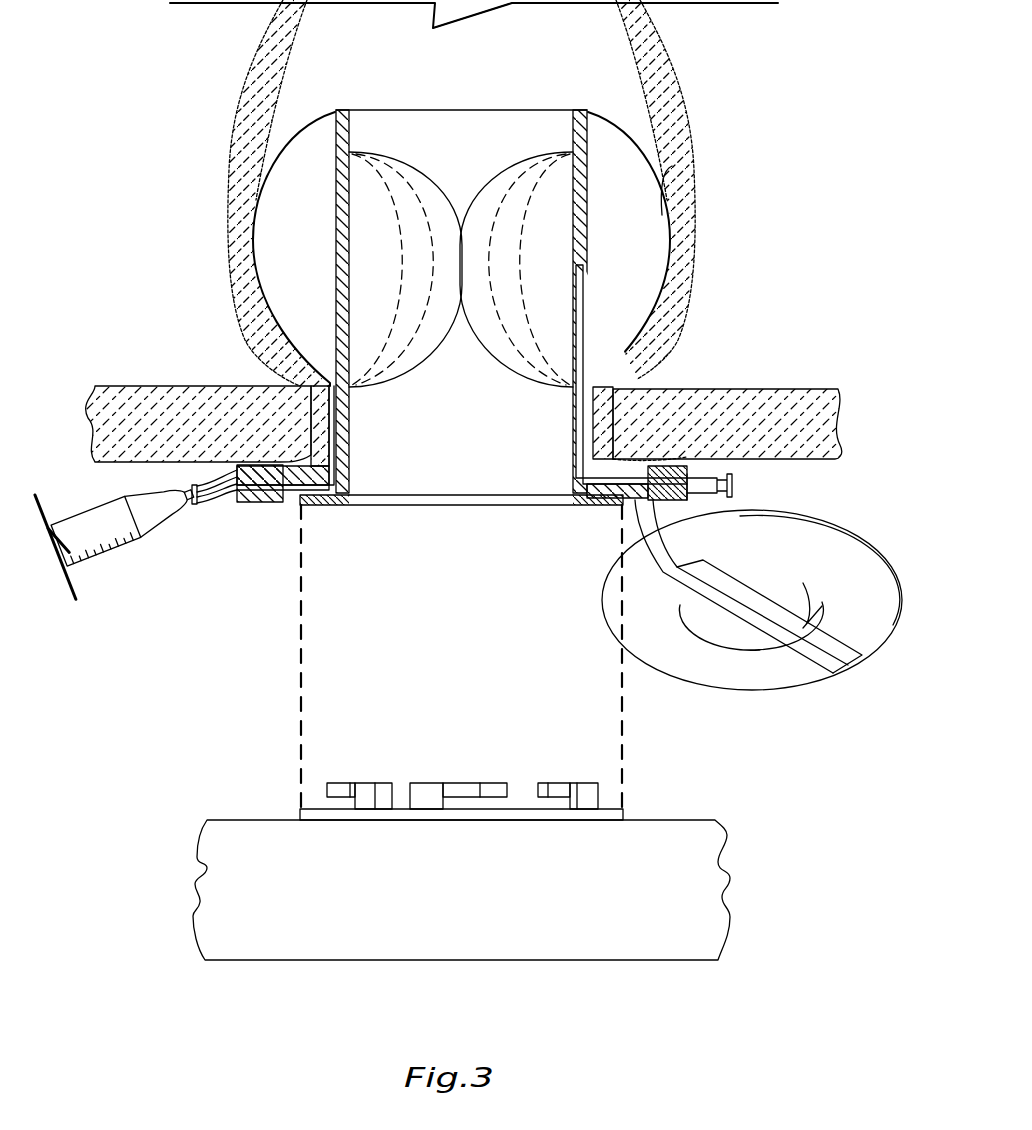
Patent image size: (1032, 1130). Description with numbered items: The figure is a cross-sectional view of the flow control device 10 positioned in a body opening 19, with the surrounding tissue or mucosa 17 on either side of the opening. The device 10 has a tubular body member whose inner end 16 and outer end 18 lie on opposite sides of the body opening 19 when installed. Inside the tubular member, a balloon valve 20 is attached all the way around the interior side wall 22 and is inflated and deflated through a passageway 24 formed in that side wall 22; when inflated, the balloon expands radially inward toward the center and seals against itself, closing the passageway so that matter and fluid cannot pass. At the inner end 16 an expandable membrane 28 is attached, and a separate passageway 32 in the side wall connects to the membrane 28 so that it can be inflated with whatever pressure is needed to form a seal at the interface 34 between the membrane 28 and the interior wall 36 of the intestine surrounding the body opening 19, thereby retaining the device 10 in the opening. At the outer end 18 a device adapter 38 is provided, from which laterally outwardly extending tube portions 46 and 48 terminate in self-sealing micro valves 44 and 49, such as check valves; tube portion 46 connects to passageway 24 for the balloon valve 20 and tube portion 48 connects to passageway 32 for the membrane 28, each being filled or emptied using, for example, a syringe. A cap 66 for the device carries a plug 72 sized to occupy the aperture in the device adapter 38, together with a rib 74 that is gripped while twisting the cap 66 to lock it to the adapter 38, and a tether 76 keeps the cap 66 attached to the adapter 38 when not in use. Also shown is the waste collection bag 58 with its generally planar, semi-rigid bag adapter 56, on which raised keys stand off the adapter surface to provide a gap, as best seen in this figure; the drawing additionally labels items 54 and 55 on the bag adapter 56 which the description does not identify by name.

The flow control device 10 is at (376, 91).
The inner end 16 is at (553, 110).
The tissue or mucosa 17 is at (243, 460).
The outer end 18 is at (445, 506).
The body opening 19 is at (593, 432).
The balloon valve 20 is at (502, 355).
The interior side wall 22 is at (350, 143).
The passageway 24 is at (577, 462).
The expandable membrane 28 is at (632, 143).
The passageway 32 is at (336, 447).
The interface 34 is at (672, 166).
The interior wall 36 is at (265, 76).
The device adapter 38 is at (574, 505).
The self-sealing micro valve 44 is at (708, 500).
The tube portion 46 is at (655, 522).
The tube portion 48 is at (279, 500).
The self-sealing micro valve 49 is at (220, 499).
The electrode 54 is at (368, 783).
The contact 55 is at (570, 797).
The bag adapter 56 is at (300, 808).
The waste collection bag 58 is at (726, 822).
The cap 66 is at (770, 678).
The plug 72 is at (806, 600).
The rib 74 is at (830, 647).
The tether 76 is at (635, 525).